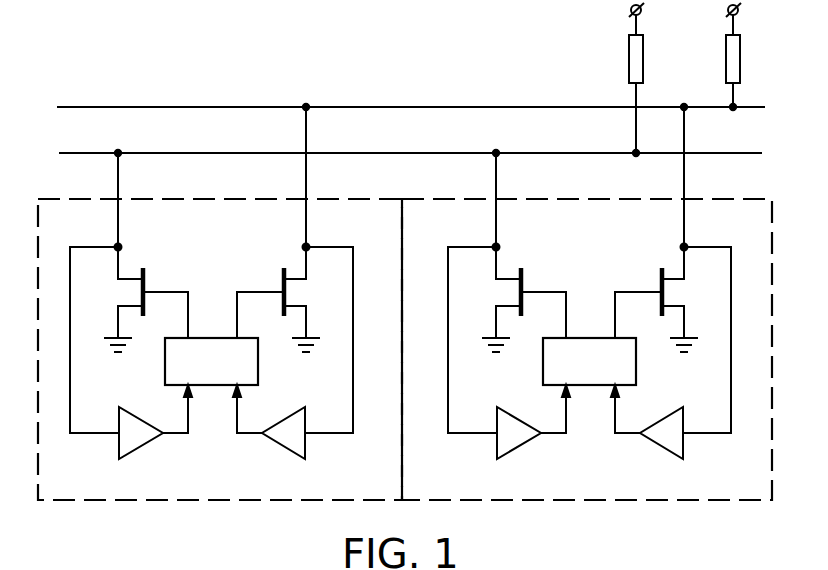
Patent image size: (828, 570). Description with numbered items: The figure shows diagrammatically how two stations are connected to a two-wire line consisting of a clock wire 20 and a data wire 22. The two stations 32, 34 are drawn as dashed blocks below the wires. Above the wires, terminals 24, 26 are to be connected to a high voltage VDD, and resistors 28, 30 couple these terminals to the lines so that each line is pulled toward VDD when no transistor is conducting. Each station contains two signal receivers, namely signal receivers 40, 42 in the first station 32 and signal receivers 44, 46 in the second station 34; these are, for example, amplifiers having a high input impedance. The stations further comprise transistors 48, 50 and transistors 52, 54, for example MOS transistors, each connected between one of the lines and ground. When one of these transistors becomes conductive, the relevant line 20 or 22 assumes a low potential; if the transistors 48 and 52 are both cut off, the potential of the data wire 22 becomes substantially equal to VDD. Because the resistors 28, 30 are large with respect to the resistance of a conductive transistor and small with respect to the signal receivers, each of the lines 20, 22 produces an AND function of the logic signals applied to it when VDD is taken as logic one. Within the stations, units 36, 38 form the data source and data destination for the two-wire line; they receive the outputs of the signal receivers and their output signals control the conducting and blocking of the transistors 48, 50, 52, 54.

The clock wire 20 is at (187, 107).
The data wire 22 is at (203, 153).
The terminal 24 is at (628, 12).
The terminal 26 is at (730, 12).
The resistor 28 is at (629, 59).
The resistor 30 is at (727, 58).
The station 32 is at (355, 484).
The station 34 is at (735, 486).
The unit 36 is at (199, 376).
The unit 38 is at (577, 376).
The signal receiver 40 is at (143, 445).
The signal receiver 42 is at (276, 445).
The signal receiver 44 is at (521, 445).
The signal receiver 46 is at (654, 445).
The transistor 48 is at (146, 273).
The transistor 50 is at (282, 274).
The transistor 52 is at (523, 278).
The transistor 54 is at (660, 280).